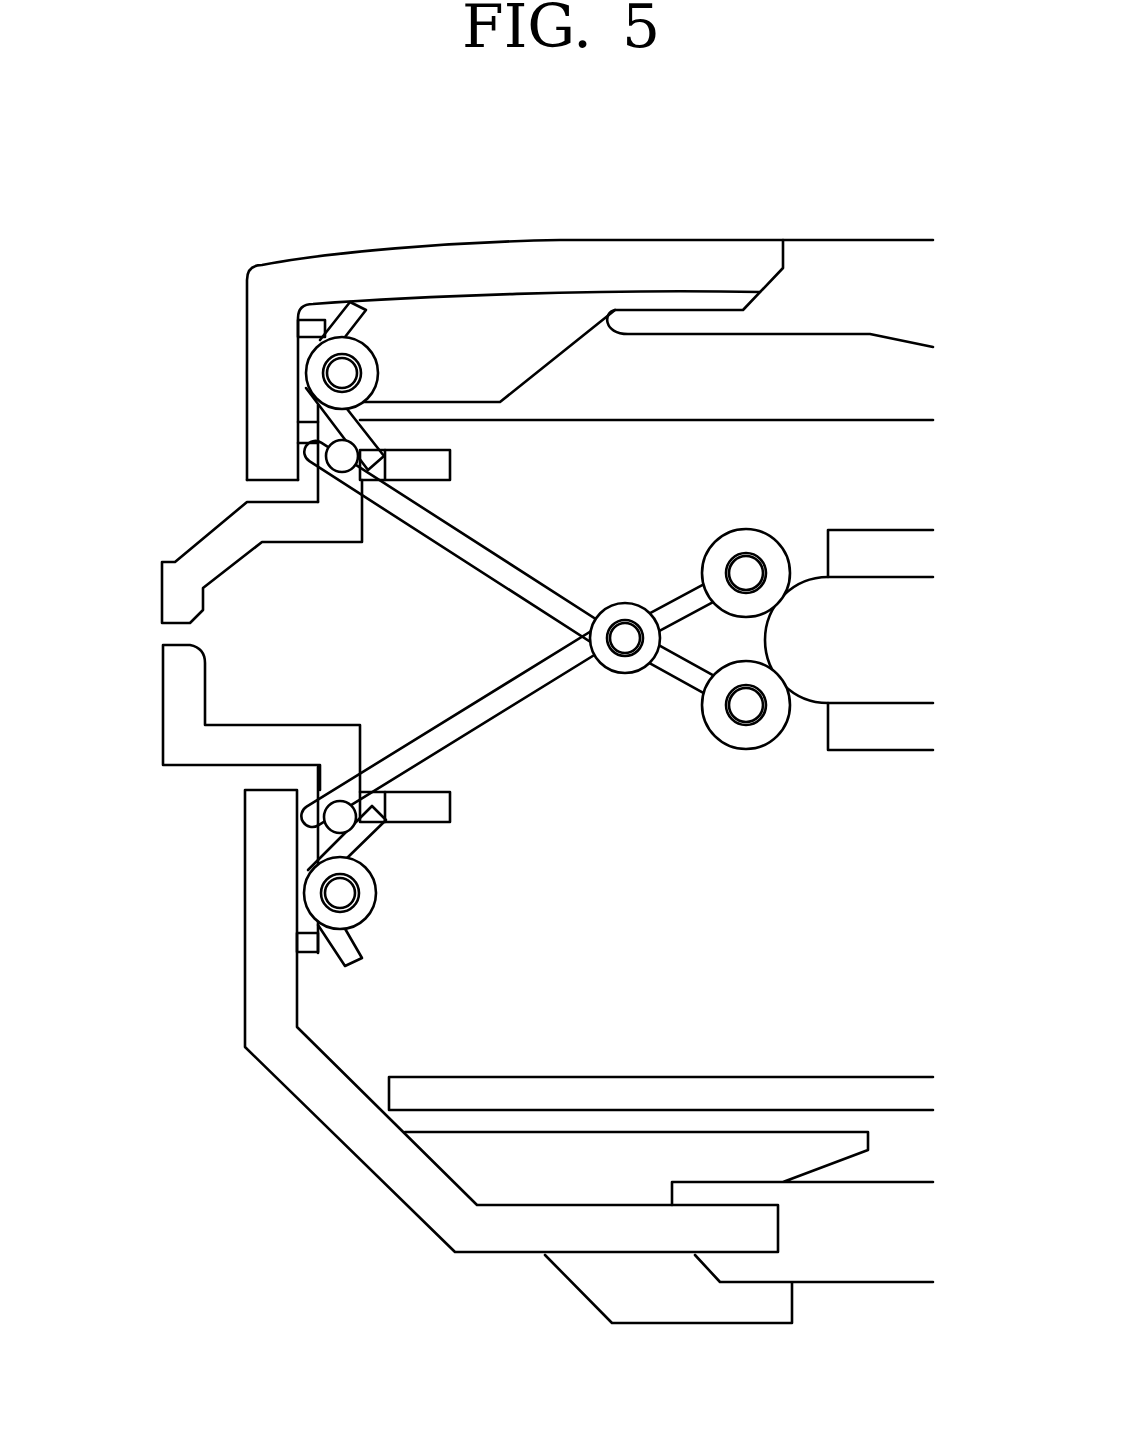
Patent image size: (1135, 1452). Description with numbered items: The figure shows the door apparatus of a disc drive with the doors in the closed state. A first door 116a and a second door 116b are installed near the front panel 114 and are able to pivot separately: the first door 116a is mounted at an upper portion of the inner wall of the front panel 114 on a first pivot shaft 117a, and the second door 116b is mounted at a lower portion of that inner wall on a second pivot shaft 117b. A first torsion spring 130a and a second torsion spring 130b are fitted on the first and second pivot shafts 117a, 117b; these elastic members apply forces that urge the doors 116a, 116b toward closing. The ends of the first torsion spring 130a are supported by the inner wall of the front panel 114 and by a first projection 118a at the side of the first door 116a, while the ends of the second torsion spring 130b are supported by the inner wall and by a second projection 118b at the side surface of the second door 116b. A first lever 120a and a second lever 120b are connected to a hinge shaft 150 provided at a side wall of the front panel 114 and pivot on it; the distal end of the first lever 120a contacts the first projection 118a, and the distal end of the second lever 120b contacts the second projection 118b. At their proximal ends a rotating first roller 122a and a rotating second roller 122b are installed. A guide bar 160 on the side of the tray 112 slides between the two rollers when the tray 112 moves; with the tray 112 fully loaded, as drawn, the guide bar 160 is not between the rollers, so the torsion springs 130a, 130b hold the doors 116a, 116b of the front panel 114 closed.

The tray 112 is at (873, 548).
The front panel 114 is at (373, 265).
The first door 116a is at (173, 592).
The second door 116b is at (173, 698).
The first pivot shaft 117a is at (338, 378).
The second pivot shaft 117b is at (347, 893).
The first projection 118a is at (340, 457).
The second projection 118b is at (343, 818).
The first lever 120a is at (470, 555).
The second lever 120b is at (485, 718).
The first roller 122a is at (746, 750).
The second roller 122b is at (748, 528).
The first torsion spring 130a is at (313, 372).
The second torsion spring 130b is at (363, 905).
The hinge shaft 150 is at (625, 635).
The guide bar 160 is at (873, 690).